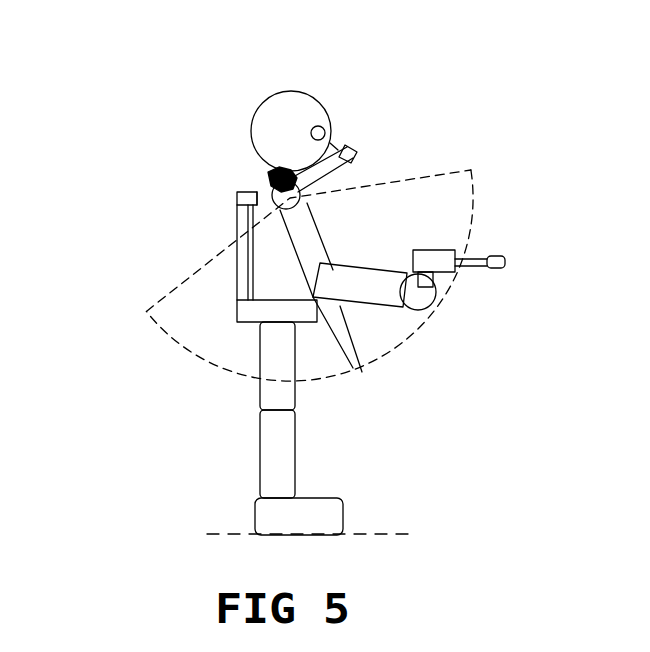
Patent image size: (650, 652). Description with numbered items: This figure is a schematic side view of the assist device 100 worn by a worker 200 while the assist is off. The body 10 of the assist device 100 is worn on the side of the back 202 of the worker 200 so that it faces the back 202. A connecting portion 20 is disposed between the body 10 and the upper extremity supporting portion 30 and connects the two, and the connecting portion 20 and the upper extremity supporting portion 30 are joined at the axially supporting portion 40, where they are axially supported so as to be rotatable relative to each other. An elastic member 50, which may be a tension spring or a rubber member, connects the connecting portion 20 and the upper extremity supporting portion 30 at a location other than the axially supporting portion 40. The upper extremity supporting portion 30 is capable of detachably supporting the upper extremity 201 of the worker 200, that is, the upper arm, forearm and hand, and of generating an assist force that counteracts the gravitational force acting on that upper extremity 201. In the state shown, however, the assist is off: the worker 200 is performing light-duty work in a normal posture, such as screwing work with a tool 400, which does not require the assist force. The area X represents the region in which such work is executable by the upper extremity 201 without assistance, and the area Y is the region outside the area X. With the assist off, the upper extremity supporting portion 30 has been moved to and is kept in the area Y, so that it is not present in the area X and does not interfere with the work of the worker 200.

The body 10 is at (237, 284).
The connecting portion 20 is at (237, 190).
The upper extremity supporting portion 30 is at (335, 175).
The axially supporting portion 40 is at (353, 371).
The elastic member 50 is at (270, 173).
The assist device 100 is at (233, 224).
The worker 200 is at (237, 102).
The upper extremity 201 is at (333, 266).
The back 202 is at (240, 244).
The tool 400 is at (452, 248).
The area in which work is executable with assist off X is at (397, 210).
The area outside area X Y is at (345, 192).